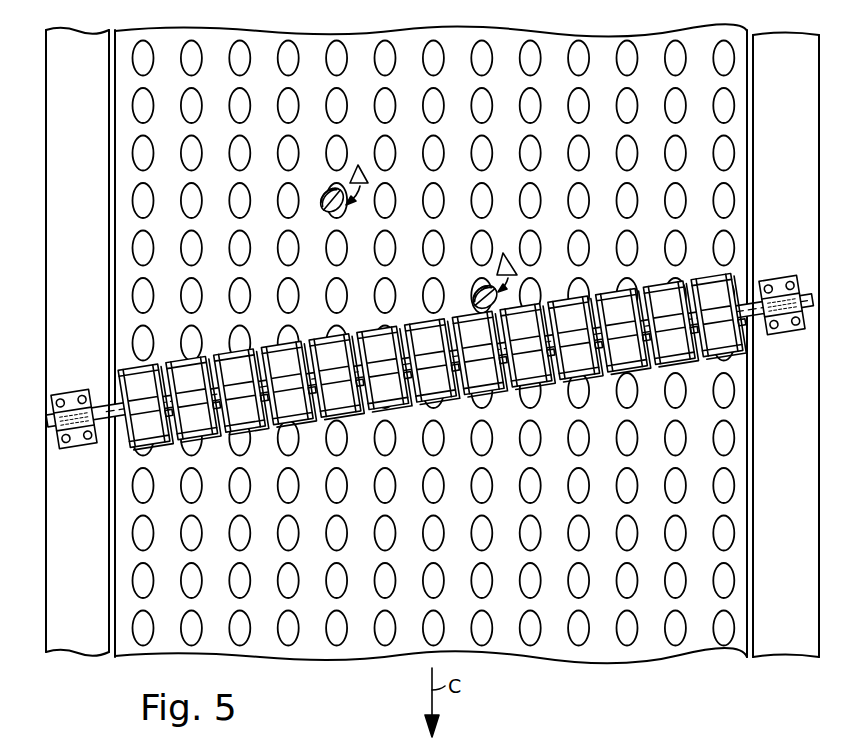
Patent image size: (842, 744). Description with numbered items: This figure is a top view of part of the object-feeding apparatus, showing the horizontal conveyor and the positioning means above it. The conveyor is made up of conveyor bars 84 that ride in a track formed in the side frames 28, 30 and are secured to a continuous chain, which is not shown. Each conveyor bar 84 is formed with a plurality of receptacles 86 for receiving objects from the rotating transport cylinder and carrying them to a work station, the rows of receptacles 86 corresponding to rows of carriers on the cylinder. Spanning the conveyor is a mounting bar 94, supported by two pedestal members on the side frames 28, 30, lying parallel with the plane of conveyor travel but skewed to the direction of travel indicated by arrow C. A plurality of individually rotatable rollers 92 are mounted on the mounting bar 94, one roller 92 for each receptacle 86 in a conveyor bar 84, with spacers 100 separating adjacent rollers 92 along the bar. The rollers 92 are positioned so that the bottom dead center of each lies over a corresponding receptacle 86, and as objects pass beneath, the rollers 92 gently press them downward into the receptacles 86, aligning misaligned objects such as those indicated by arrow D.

The side frame 28 is at (73, 622).
The side frame 30 is at (781, 628).
The conveyor bar 84 is at (793, 573).
The receptacle 86 is at (728, 645).
The roller 92 is at (714, 304).
The mounting bar 94 is at (108, 404).
The spacer 100 is at (643, 300).